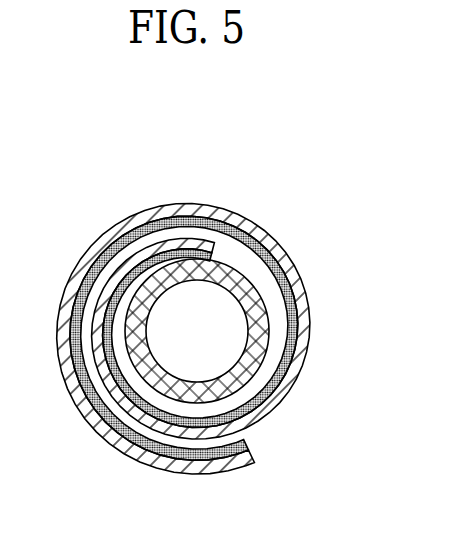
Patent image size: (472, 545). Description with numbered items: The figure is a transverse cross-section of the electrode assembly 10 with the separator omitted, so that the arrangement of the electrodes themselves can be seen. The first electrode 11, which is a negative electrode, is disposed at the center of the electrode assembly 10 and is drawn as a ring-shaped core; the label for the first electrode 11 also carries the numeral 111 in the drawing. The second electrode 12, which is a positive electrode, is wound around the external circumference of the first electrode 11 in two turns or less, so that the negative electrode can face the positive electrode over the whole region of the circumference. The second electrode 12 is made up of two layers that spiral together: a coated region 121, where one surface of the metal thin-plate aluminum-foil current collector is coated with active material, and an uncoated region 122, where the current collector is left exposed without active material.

The electrode assembly 10 is at (207, 146).
The first electrode 11 is at (243, 308).
The core 111 is at (248, 277).
The second electrode 12 is at (238, 339).
The coated region 121 is at (303, 313).
The uncoated region 122 is at (310, 333).